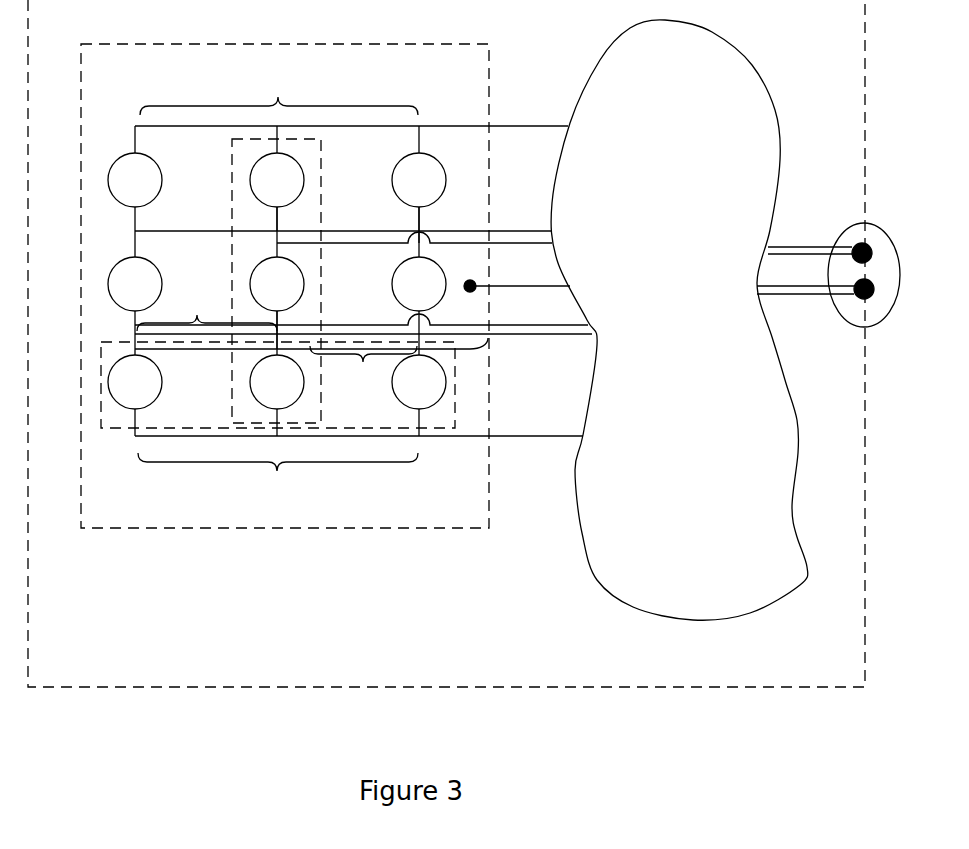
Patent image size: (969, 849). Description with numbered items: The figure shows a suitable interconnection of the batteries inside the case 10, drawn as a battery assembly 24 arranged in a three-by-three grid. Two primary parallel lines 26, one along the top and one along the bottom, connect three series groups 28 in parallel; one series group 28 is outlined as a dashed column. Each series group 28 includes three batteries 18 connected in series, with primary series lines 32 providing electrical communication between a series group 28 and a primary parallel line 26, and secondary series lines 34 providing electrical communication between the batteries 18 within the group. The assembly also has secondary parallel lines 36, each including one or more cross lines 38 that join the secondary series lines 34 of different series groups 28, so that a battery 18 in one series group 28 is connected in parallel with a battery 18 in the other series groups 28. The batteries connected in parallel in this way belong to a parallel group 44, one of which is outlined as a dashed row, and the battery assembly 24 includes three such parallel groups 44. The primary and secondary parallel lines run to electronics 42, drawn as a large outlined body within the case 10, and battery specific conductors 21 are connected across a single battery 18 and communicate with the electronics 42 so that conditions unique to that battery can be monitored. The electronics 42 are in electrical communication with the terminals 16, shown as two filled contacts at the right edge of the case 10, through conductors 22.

The case 10 is at (789, 687).
The terminals 16 is at (873, 248).
The batteries 18 is at (158, 265).
The battery specific conductors 21 is at (470, 242).
The output wires 22 is at (795, 297).
The battery assembly 24 is at (462, 528).
The primary parallel lines 26 is at (359, 285).
The series groups 28 is at (232, 207).
The primary series lines 32 is at (137, 137).
The secondary series lines 34 is at (277, 217).
The secondary parallel lines 36 is at (311, 365).
The cross lines 38 is at (207, 309).
The electronics 42 is at (780, 142).
The parallel groups 44 is at (455, 385).